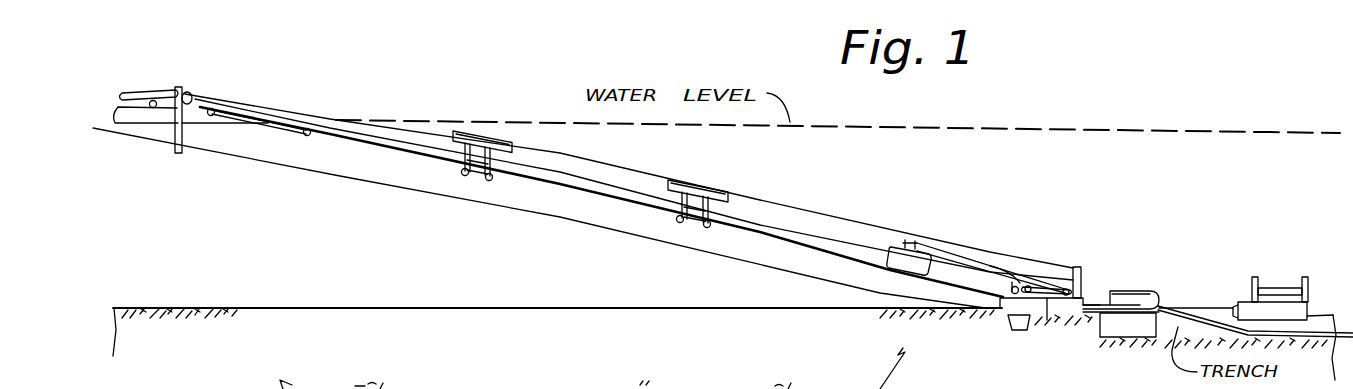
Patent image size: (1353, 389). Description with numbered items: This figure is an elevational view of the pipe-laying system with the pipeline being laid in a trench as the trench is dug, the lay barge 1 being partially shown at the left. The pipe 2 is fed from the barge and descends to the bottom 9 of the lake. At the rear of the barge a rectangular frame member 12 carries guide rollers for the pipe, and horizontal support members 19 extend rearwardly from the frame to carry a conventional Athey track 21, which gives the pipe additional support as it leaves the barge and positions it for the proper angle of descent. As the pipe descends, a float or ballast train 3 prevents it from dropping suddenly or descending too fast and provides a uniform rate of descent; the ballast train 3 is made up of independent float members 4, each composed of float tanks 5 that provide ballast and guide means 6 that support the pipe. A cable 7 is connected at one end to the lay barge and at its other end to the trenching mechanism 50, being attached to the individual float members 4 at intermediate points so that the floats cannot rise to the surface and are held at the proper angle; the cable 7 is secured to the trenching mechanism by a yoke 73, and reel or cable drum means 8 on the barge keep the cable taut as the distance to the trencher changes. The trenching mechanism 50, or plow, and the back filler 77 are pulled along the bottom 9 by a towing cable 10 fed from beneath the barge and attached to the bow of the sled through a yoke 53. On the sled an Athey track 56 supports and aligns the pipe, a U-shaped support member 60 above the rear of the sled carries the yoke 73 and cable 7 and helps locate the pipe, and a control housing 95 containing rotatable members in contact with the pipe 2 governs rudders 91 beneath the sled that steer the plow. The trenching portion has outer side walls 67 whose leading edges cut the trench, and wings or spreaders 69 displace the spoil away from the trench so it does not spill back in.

The lay barge 1 is at (108, 106).
The pipe 2 is at (389, 144).
The ballast train 3 is at (722, 185).
The float member 4 is at (518, 156).
The float tank 5 is at (478, 143).
The guide means 6 is at (457, 176).
The cable 7 is at (857, 220).
The reel or cable drum means 8 is at (178, 88).
The bottom 9 is at (333, 308).
The towing cable 10 is at (290, 168).
The rectangular frame member 12 is at (195, 95).
The support members 19 is at (208, 128).
The Athey track 21 is at (286, 124).
The trenching mechanism 50 is at (1117, 283).
The yoke 53 is at (953, 287).
The Athey track 56 is at (1047, 317).
The U-shaped support member 60 is at (1077, 267).
The outer side wall 67 is at (1123, 330).
The wings or spreaders 69 is at (1140, 291).
The yoke 73 is at (1003, 252).
The back filler 77 is at (1282, 286).
The rudders 91 is at (1012, 327).
The control housing 95 is at (898, 267).